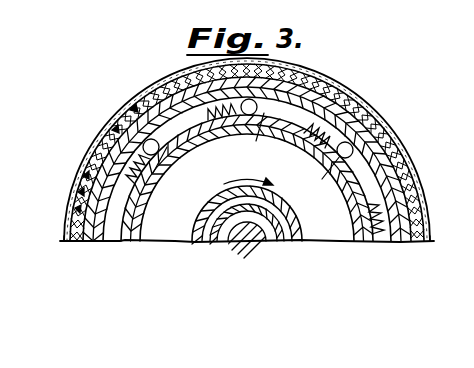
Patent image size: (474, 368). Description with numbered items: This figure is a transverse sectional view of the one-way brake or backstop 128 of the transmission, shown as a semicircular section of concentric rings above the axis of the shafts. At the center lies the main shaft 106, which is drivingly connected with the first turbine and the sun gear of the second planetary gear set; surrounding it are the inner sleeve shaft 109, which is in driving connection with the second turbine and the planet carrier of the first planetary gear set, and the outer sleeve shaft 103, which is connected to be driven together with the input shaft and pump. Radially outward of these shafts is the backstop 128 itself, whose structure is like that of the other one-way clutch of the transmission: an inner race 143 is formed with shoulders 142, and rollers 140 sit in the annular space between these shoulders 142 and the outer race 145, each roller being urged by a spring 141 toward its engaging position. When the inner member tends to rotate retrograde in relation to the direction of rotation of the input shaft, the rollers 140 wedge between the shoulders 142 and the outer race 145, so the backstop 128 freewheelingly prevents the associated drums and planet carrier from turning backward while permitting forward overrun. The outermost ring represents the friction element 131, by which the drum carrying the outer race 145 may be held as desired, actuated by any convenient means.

The outer sleeve shaft 103 is at (190, 240).
The main shaft 106 is at (245, 241).
The inner sleeve shaft 109 is at (283, 240).
The one-way brake or backstop 128 is at (166, 128).
The friction element 131 is at (339, 84).
The rollers 140 is at (160, 151).
The springs 141 is at (142, 172).
The shoulders 142 is at (383, 124).
The inner race 143 is at (412, 163).
The outer race 145 is at (108, 154).